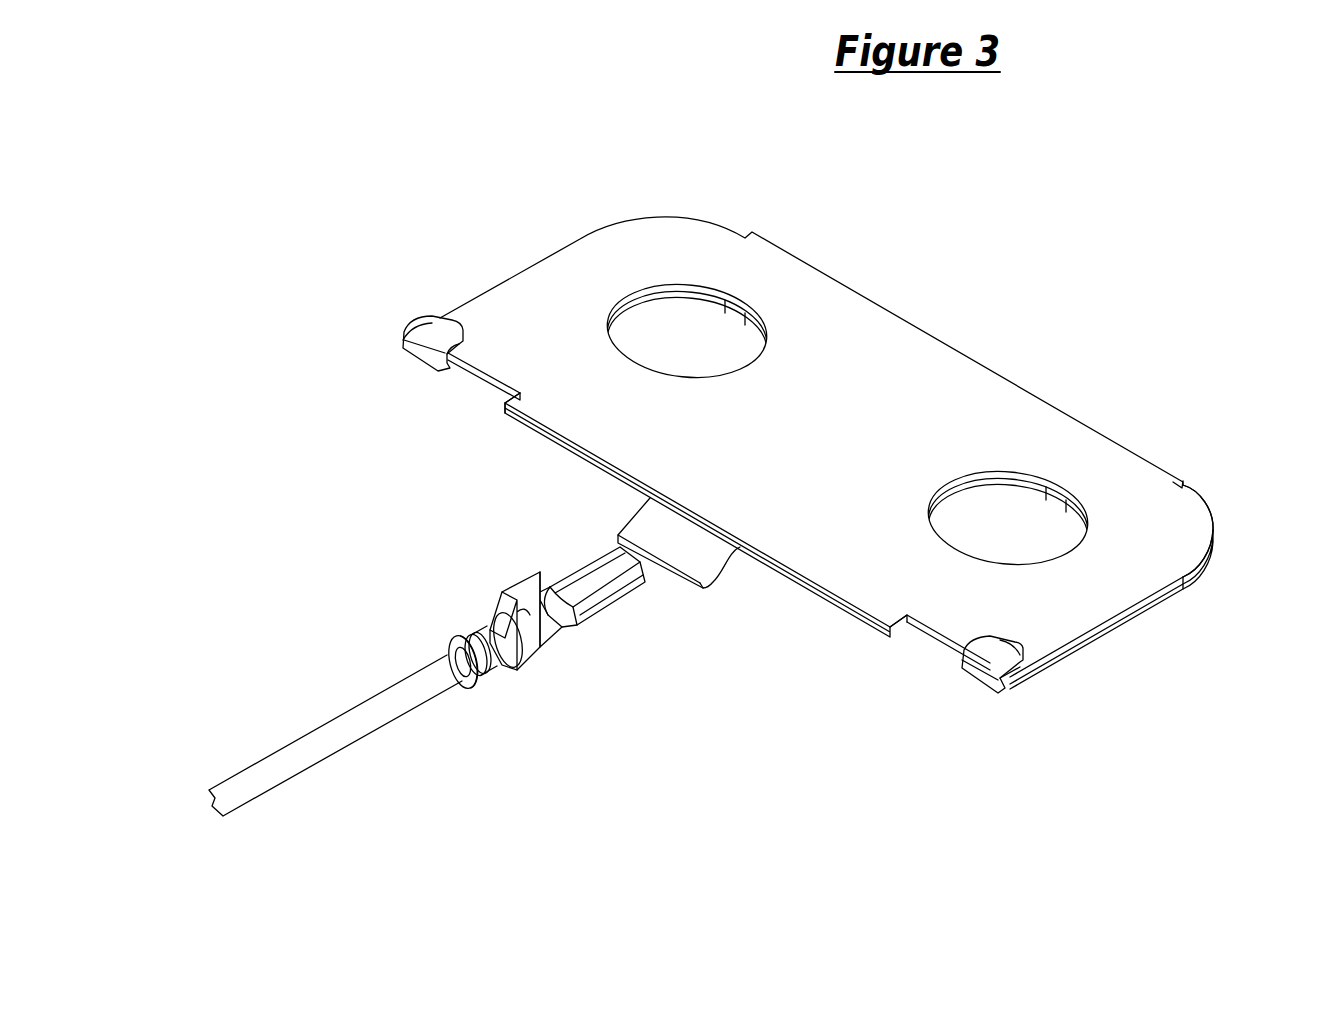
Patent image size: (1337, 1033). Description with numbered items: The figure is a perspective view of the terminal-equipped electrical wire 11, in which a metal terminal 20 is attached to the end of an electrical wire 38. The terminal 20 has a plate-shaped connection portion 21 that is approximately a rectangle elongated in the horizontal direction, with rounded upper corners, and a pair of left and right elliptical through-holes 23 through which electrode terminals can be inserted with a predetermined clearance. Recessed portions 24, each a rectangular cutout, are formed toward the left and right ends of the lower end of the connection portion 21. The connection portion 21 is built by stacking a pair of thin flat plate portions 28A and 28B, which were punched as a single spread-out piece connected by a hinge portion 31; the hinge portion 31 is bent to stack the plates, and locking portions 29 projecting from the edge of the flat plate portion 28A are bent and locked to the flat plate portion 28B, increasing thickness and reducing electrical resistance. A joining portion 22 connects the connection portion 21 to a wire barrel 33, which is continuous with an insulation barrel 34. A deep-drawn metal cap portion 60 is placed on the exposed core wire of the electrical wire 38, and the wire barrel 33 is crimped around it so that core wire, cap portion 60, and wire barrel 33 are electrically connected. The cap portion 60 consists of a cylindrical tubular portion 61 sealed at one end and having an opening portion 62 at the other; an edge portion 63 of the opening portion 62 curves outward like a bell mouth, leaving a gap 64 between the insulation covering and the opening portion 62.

The wire connection structure 11 is at (958, 330).
The terminal 20 is at (850, 337).
The connection portion 21 is at (910, 337).
The joining portion 22 is at (713, 563).
The through-holes 23 is at (653, 292).
The recessed portions 24 is at (481, 371).
The flat plate portion 28A is at (1167, 535).
The flat plate portion 28B is at (1157, 600).
The locking portions 29 is at (428, 332).
The hinge portion 31 is at (1182, 480).
The wire barrel 33 is at (600, 583).
The insulation barrel 34 is at (543, 630).
The electrical wire 38 is at (282, 773).
The cap portion 60 is at (473, 630).
The tubular portion 61 is at (523, 650).
The opening portion 62 is at (487, 667).
The edge portion 63 is at (483, 683).
The gap 64 is at (447, 650).